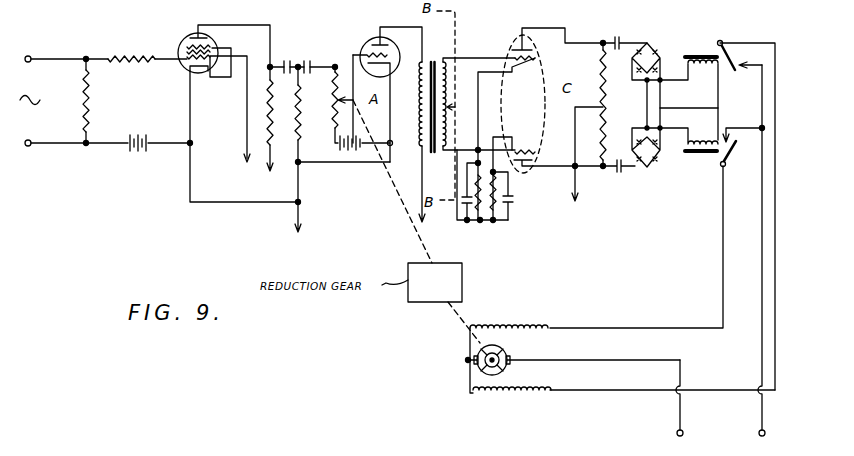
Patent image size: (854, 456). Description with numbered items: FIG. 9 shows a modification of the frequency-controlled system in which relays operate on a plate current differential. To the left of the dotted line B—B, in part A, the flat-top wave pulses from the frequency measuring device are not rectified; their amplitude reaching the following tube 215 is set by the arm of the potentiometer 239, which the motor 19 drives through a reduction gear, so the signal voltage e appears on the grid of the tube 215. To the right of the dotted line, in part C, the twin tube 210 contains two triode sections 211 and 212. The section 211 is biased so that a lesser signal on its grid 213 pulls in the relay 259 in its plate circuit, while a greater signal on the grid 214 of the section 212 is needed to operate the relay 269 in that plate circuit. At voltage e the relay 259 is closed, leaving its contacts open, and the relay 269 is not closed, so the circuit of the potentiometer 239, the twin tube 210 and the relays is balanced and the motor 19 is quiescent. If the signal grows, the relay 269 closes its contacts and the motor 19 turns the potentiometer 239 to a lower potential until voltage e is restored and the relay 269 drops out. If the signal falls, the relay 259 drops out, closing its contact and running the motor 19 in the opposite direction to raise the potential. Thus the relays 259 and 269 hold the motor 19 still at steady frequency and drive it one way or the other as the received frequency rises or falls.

The potentiometer 239 is at (335, 129).
The tube 215 is at (361, 46).
The twin tube 210 is at (536, 124).
The triode section 211 is at (557, 49).
The grid 213 is at (506, 139).
The triode section 212 is at (537, 152).
The grid 214 is at (536, 167).
The relay 259 is at (698, 55).
The relay 269 is at (706, 158).
The motor 19 is at (506, 353).